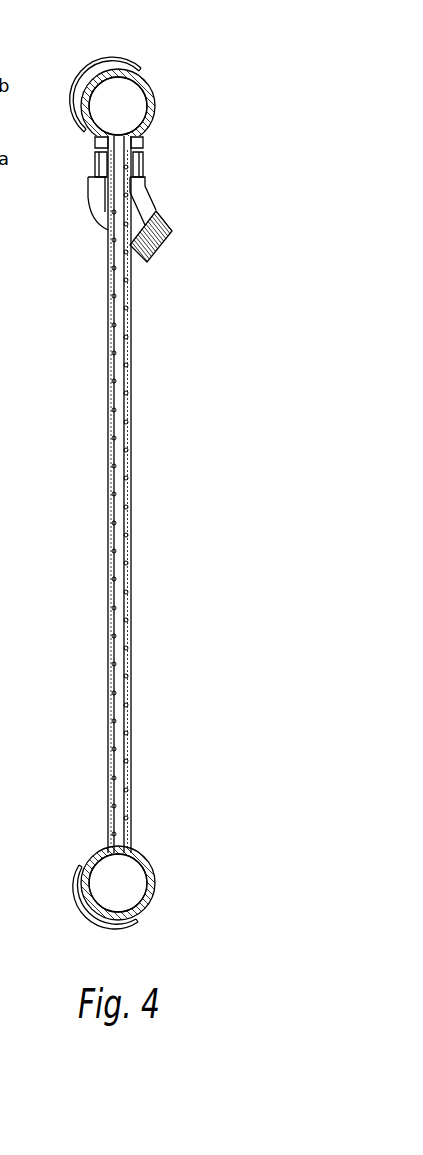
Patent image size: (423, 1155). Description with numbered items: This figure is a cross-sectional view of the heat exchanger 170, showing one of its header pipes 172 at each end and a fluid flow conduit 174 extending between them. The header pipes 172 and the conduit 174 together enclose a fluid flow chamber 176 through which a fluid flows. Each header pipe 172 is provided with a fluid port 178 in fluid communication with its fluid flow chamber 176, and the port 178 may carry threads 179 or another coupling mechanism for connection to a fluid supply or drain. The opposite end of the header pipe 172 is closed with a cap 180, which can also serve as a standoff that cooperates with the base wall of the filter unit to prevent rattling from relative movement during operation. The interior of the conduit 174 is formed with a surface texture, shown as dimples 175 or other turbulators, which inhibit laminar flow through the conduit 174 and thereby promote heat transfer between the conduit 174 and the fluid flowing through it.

The heat exchanger 170 is at (137, 481).
The header pipe 172 is at (154, 113).
The fluid flow conduit 174 is at (110, 465).
The dimples 175 is at (127, 334).
The fluid flow chamber 176 is at (125, 106).
The fluid port 178 is at (150, 197).
The threads 179 is at (173, 224).
The cap 180 is at (81, 102).